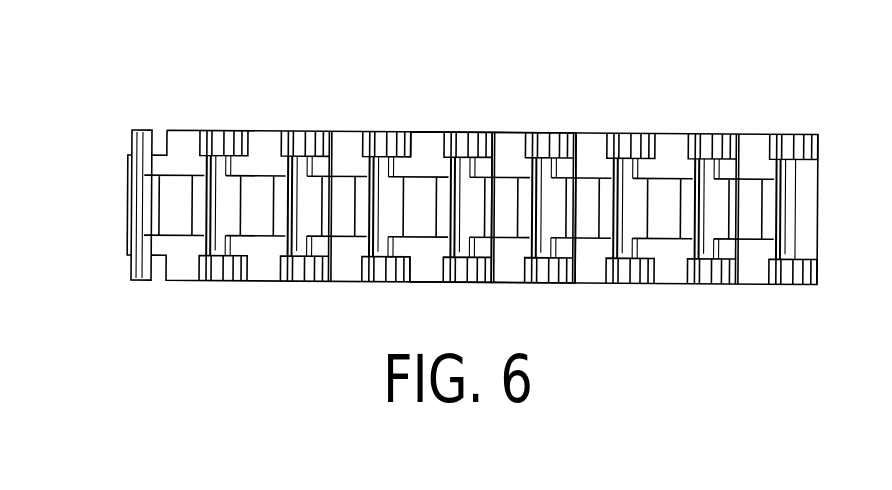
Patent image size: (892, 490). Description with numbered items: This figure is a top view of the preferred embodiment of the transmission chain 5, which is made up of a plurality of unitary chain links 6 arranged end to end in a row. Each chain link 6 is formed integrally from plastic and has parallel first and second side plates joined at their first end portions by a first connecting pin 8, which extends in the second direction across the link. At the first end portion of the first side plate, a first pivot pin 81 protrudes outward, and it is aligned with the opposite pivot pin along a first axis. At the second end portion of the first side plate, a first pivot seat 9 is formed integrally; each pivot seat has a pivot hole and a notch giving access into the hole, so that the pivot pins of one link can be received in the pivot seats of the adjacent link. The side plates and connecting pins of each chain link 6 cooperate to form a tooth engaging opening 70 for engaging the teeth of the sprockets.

The transmission chain 5 is at (511, 104).
The unitary chain link 6 is at (430, 118).
The first connecting pin 8 is at (121, 121).
The first pivot pin 81 is at (143, 128).
The first pivot seat 9 is at (230, 116).
The tooth engaging opening 70 is at (168, 220).